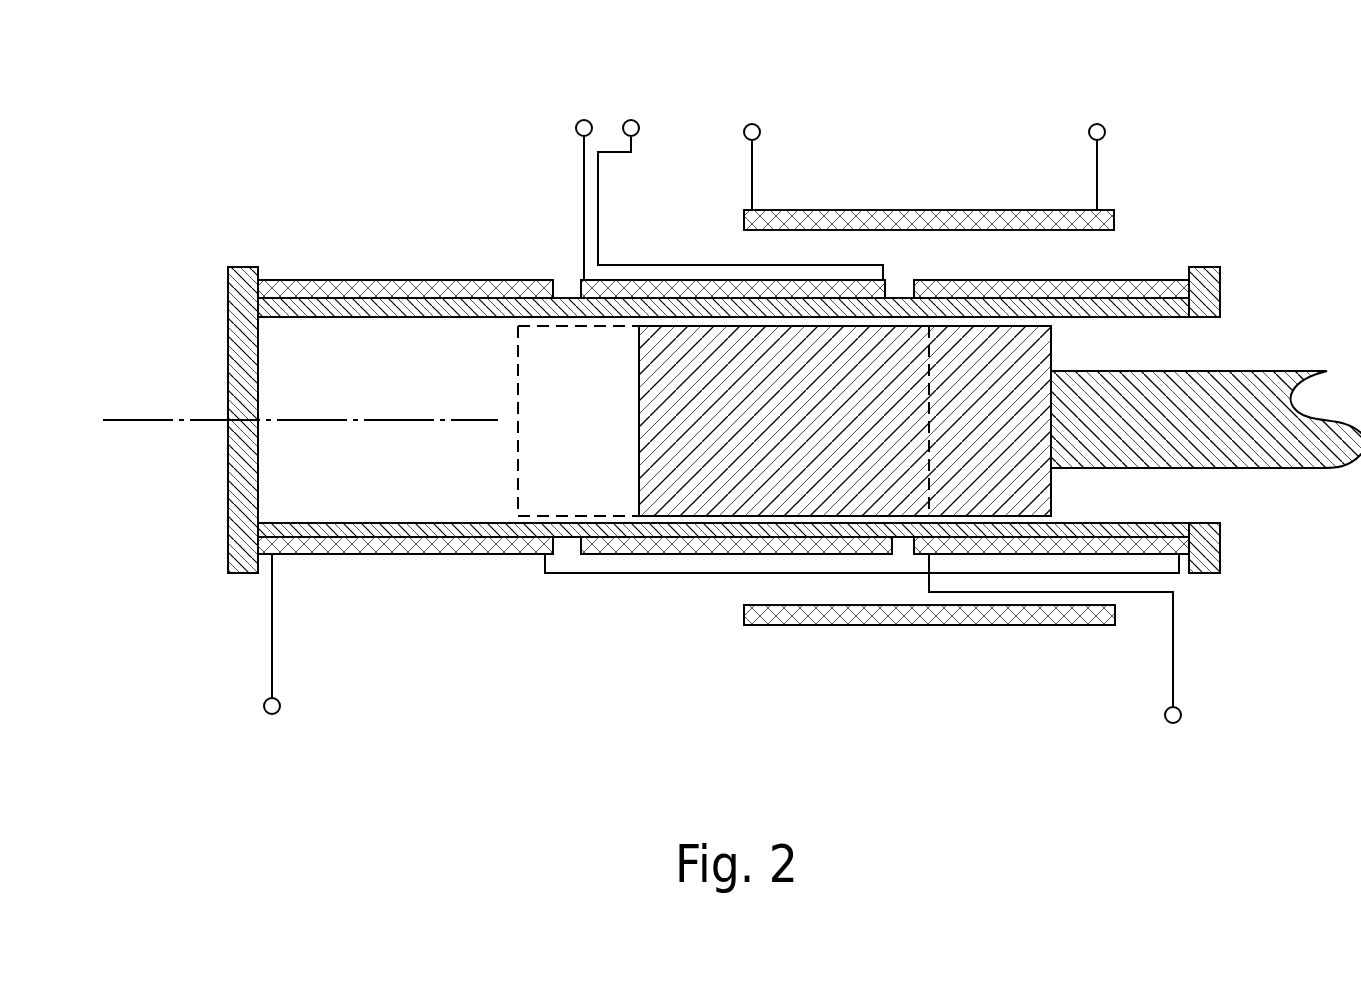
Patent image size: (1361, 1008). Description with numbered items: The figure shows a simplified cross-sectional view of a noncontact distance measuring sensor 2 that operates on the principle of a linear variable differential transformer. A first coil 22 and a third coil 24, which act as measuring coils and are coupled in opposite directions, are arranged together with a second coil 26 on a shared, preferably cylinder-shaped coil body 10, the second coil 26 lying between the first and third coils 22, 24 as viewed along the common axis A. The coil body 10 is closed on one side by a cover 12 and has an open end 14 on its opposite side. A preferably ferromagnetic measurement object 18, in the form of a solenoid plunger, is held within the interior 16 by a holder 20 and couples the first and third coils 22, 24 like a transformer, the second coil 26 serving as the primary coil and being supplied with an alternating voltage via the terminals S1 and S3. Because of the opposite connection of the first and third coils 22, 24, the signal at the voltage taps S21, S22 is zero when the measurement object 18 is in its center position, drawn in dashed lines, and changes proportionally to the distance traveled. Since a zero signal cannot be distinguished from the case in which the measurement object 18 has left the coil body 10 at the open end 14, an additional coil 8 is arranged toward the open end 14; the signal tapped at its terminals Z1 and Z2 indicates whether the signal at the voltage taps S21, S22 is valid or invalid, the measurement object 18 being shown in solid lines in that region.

The distance measuring sensor 2 is at (1213, 112).
The additional coil 8 is at (912, 210).
The coil body 10 is at (568, 298).
The cover 12 is at (226, 512).
The open end 14 is at (1250, 320).
The interior 16 is at (455, 485).
The measurement object 18 is at (806, 429).
The holder 20 is at (1288, 462).
The first coil 22 is at (385, 280).
The third coil 24 is at (1162, 280).
The second coil 26 is at (637, 555).
The common axis A is at (146, 420).
The terminal S1 is at (584, 186).
The terminal S3 is at (740, 186).
The terminal of the additional coil Z1 is at (751, 151).
The terminal of the additional coil Z2 is at (1096, 151).
The voltage tap S21 is at (273, 652).
The voltage tap S22 is at (1062, 656).